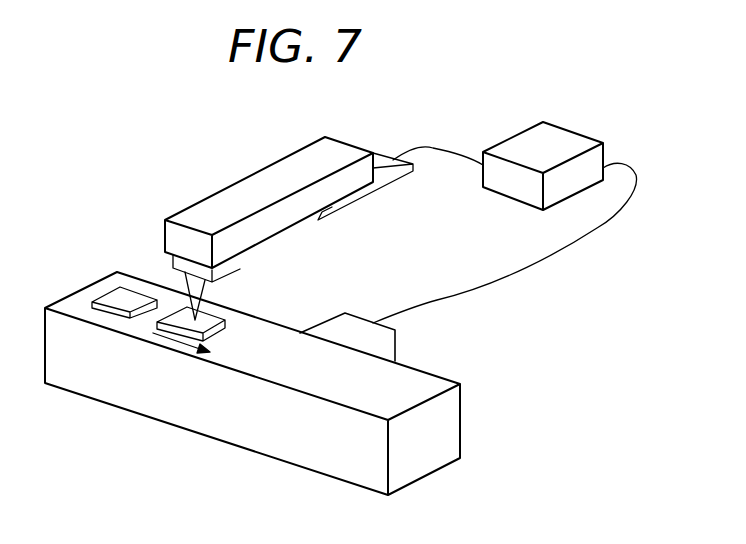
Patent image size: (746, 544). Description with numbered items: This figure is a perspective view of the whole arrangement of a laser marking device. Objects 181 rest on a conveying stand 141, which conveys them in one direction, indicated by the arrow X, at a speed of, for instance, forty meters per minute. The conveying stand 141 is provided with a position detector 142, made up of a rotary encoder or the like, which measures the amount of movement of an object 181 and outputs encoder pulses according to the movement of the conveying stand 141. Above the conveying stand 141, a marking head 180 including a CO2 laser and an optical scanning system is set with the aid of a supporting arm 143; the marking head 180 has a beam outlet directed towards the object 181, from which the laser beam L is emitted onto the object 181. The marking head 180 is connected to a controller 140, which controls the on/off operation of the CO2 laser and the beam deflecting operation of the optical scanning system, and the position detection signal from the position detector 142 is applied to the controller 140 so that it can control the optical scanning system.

The controller 140 is at (562, 135).
The conveying stand 141 is at (260, 442).
The position detector 142 is at (355, 322).
The supporting arm 143 is at (388, 152).
The marking head 180 is at (215, 202).
The object 181 is at (112, 293).
The laser beam L is at (207, 288).
The X direction X is at (181, 354).